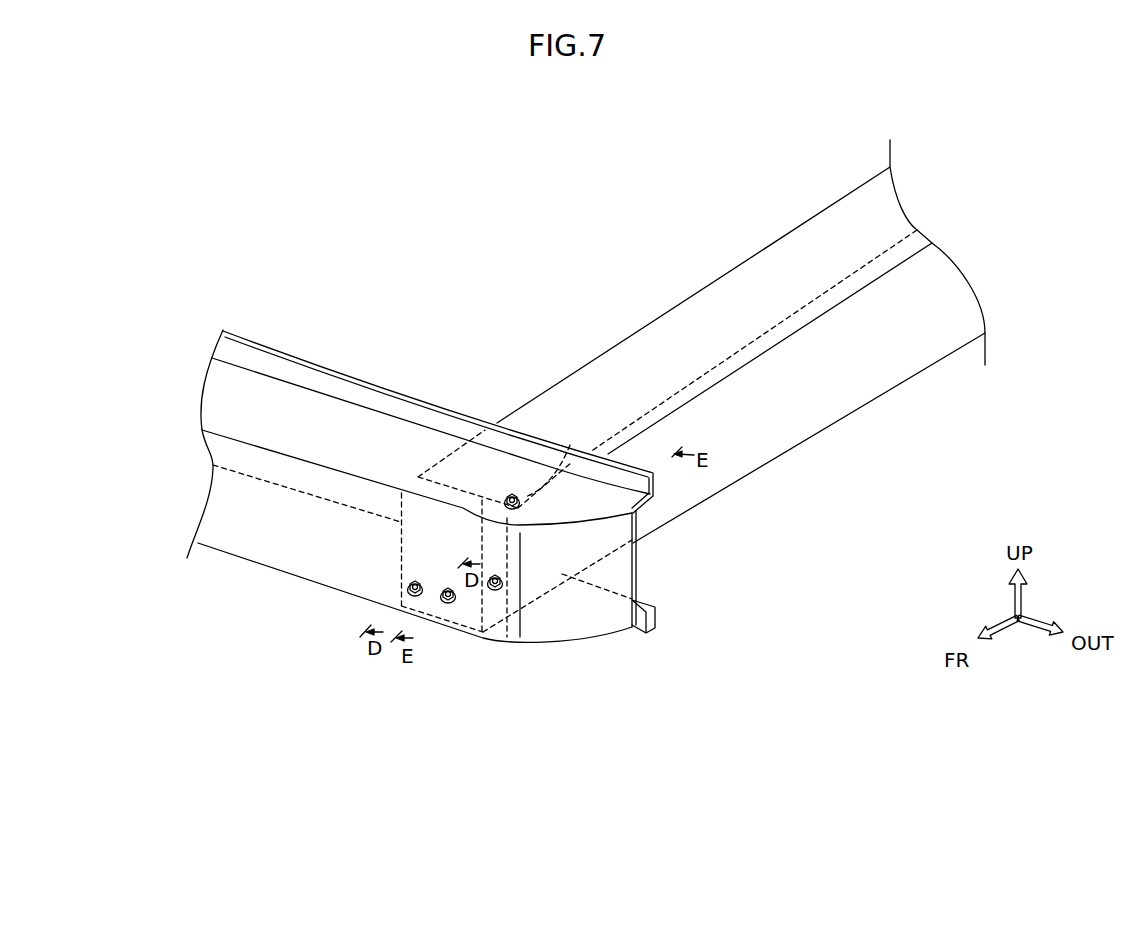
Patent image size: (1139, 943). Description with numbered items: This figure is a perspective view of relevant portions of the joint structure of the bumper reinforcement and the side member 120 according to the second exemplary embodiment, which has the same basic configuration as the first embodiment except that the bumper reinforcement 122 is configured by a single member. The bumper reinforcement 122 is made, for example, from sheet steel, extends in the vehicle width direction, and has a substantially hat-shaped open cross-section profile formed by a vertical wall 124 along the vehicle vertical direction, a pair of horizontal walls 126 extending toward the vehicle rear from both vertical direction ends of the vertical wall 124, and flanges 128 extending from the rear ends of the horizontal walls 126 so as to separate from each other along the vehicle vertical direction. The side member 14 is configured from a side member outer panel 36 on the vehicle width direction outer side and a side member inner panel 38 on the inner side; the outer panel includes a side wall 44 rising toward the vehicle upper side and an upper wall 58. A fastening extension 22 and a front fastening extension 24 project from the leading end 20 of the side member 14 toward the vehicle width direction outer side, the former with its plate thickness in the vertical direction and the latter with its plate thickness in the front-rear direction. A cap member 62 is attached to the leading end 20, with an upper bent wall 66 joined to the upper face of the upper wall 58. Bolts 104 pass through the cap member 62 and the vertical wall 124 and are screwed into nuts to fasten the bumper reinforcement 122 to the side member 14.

The side member 14 is at (748, 246).
The leading end 20 is at (518, 640).
The fastening extension 22 is at (518, 496).
The front fastening extension 24 is at (492, 643).
The side member outer panel 36 is at (737, 492).
The side member inner panel 38 is at (678, 300).
The side wall 44 is at (735, 408).
The upper wall 58 is at (630, 393).
The cap member 62 is at (460, 494).
The upper bent wall 66 is at (418, 480).
The bolt 104 is at (415, 596).
The joint structure of the bumper reinforcement and the side member 120 is at (505, 221).
The bumper reinforcement 122 is at (300, 355).
The vertical wall 124 is at (268, 500).
The horizontal wall 126 is at (300, 440).
The flange 128 is at (407, 412).